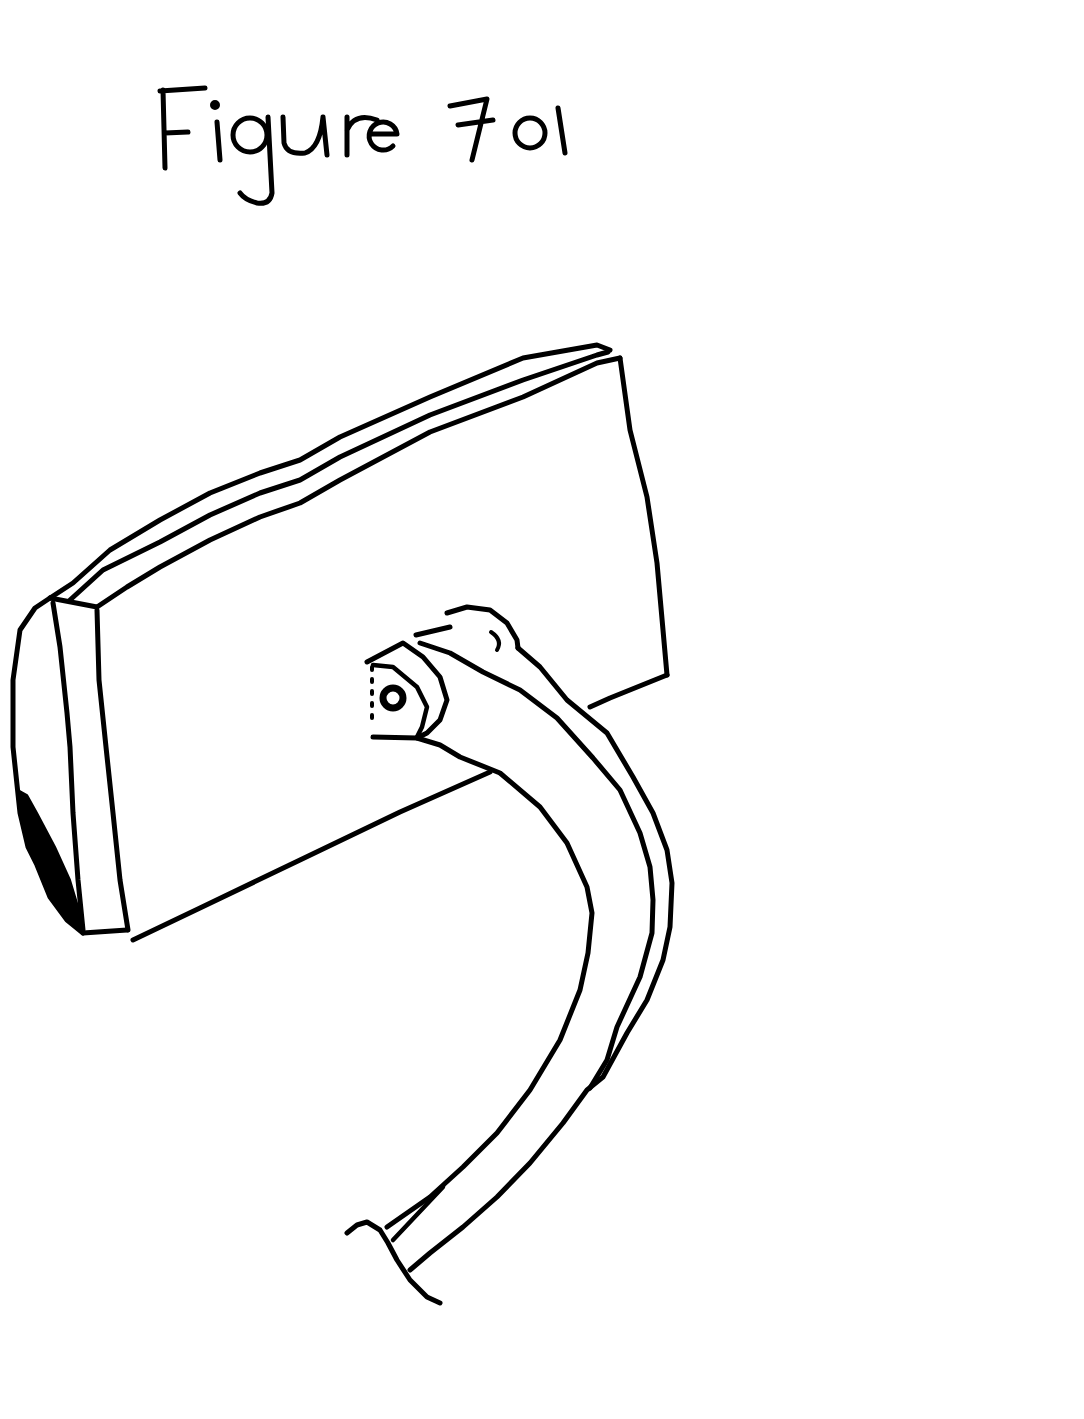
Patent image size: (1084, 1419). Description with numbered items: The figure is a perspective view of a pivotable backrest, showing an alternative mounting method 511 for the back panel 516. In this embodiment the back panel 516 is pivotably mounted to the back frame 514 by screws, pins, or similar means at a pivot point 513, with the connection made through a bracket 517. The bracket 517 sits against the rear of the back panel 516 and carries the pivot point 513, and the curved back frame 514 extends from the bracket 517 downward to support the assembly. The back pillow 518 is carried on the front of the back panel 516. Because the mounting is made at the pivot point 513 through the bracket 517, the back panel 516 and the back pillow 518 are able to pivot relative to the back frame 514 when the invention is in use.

The alternative mounting method 511 is at (755, 129).
The pivot point 513 is at (383, 698).
The back frame 514 is at (633, 790).
The back panel 516 is at (610, 355).
The bracket 517 is at (366, 660).
The back pillow 518 is at (227, 490).